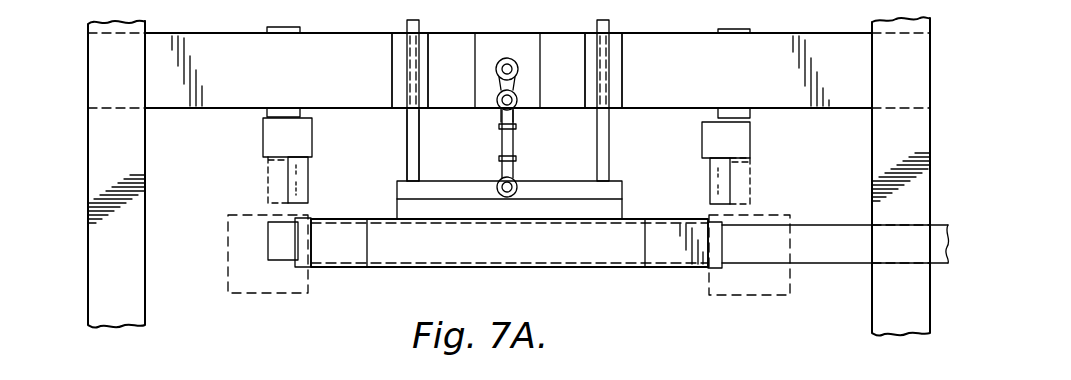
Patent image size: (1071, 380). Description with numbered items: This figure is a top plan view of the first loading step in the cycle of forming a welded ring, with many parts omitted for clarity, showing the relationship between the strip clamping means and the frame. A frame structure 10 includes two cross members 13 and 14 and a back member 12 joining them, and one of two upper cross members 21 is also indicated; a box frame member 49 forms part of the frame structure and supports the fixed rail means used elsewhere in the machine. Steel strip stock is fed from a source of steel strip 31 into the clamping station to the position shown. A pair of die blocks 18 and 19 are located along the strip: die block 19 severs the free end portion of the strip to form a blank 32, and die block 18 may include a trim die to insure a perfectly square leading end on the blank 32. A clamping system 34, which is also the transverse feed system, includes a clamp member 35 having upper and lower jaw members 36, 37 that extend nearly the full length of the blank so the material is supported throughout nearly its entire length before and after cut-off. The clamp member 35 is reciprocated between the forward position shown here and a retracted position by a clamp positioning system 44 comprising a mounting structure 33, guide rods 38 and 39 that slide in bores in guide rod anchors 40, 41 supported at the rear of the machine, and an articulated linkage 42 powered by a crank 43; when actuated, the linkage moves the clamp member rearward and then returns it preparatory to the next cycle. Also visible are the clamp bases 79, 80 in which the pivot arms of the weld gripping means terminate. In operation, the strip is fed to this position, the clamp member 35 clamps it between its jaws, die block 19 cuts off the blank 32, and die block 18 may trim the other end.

The frame structure 10 is at (80, 265).
The back member 12 is at (370, 8).
The cross member 13 is at (117, 325).
The cross member 14 is at (906, 333).
The die block 18 is at (280, 295).
The die block 19 is at (756, 300).
The upper cross member 21 is at (145, 23).
The source of steel strip 31 is at (858, 263).
The blank 32 is at (270, 240).
The mounting structure 33 is at (510, 57).
The clamping system 34 is at (622, 196).
The clamp member 35 is at (515, 270).
The upper jaw member 36 is at (562, 250).
The lower jaw member 37 is at (696, 268).
The guide rod 38 is at (420, 156).
The guide rod 39 is at (610, 155).
The guide rod anchor 40 is at (392, 72).
The guide rod anchor 41 is at (622, 80).
The articulated linkage 42 is at (515, 153).
The crank 43 is at (518, 90).
The clamp positioning system 44 is at (398, 146).
The box frame member 49 is at (709, 14).
The clamp base 79 is at (263, 140).
The clamp base 80 is at (750, 146).